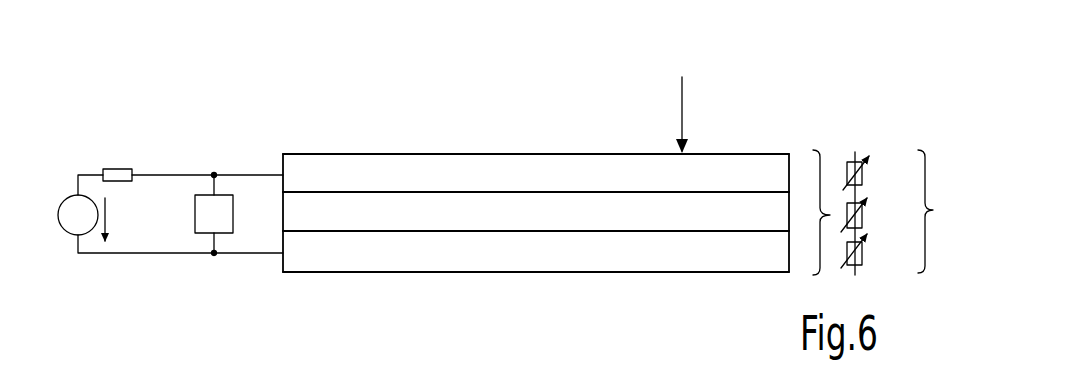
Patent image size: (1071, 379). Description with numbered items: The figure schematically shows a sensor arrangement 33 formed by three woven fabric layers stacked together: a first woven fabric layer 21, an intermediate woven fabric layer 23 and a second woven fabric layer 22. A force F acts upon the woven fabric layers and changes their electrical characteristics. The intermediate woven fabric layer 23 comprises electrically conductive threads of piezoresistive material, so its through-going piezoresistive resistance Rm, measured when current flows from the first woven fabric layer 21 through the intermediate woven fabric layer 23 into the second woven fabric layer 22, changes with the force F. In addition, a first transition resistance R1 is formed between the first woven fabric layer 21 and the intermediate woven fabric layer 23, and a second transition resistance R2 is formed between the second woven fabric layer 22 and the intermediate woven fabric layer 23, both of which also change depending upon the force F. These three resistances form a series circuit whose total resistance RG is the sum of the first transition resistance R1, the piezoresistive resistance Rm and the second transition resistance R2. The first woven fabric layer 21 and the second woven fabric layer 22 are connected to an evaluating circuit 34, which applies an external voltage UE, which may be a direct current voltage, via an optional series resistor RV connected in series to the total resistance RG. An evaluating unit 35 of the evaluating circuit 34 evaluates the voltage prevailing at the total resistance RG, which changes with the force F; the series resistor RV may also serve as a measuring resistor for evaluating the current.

The evaluating circuit 34 is at (227, 130).
The series resistor RV is at (118, 167).
The external voltage UE is at (120, 219).
The evaluating unit 35 is at (195, 207).
The sensor arrangement 33 is at (793, 93).
The first woven fabric layer 21 is at (450, 165).
The intermediate woven fabric layer 23 is at (517, 212).
The second woven fabric layer 22 is at (452, 253).
The force F is at (683, 118).
The total resistance RG is at (911, 212).
The first transition resistance R1 is at (862, 180).
The piezoresistive resistance Rm is at (862, 216).
The second transition resistance R2 is at (865, 257).